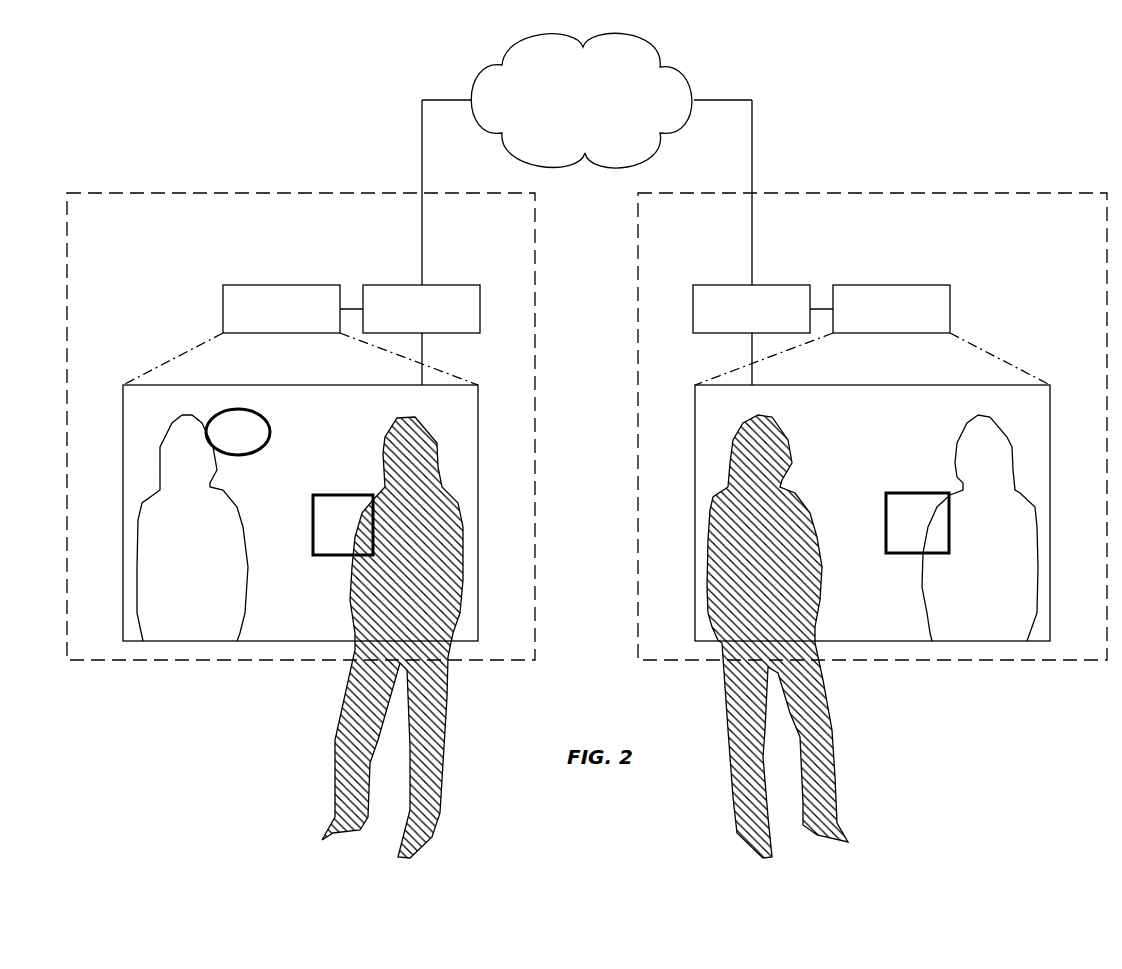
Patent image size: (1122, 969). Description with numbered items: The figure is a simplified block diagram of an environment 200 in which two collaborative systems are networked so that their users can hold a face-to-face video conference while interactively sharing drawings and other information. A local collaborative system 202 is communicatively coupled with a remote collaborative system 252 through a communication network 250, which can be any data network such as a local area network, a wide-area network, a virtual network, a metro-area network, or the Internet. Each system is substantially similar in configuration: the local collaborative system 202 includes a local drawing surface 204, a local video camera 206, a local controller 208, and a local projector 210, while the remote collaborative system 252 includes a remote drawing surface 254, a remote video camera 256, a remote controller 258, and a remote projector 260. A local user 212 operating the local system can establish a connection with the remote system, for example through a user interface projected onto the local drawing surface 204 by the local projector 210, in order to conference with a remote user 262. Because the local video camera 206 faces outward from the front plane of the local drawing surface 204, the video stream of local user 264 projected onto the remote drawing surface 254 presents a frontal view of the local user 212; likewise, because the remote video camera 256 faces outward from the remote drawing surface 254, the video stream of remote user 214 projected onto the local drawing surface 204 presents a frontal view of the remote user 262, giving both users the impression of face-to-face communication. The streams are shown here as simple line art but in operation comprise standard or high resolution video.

The environment 200 is at (1030, 72).
The local collaborative system 202 is at (148, 193).
The local drawing surface 204 is at (310, 643).
The local video camera 206 is at (302, 488).
The local controller 208 is at (461, 285).
The local projector 210 is at (280, 285).
The local user 212 is at (447, 697).
The video stream of remote user 214 is at (182, 622).
The communication network 250 is at (616, 168).
The remote collaborative system 252 is at (876, 193).
The remote drawing surface 254 is at (872, 643).
The remote video camera 256 is at (875, 488).
The remote controller 258 is at (745, 285).
The remote projector 260 is at (892, 285).
The remote user 262 is at (727, 700).
The video stream of local user 264 is at (988, 620).